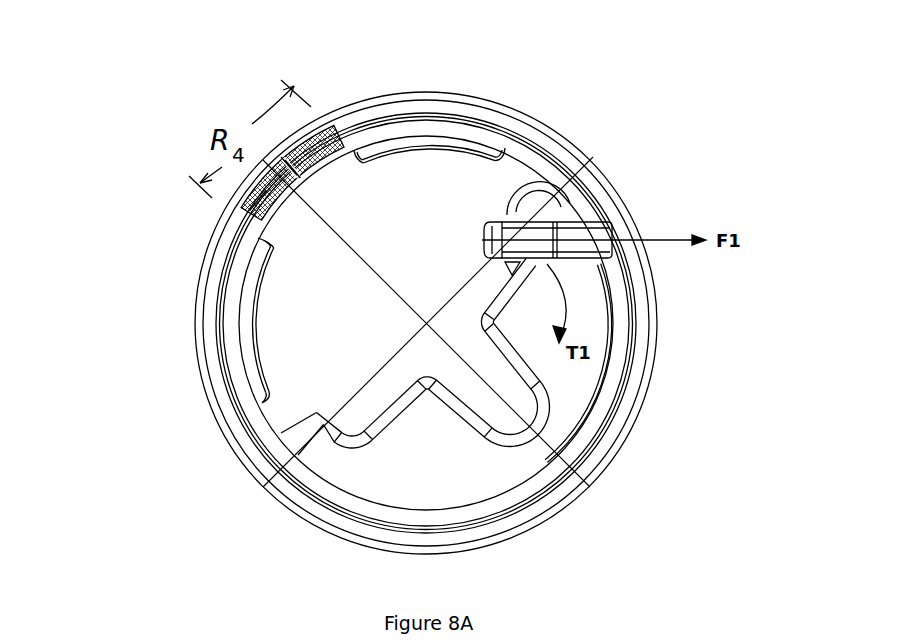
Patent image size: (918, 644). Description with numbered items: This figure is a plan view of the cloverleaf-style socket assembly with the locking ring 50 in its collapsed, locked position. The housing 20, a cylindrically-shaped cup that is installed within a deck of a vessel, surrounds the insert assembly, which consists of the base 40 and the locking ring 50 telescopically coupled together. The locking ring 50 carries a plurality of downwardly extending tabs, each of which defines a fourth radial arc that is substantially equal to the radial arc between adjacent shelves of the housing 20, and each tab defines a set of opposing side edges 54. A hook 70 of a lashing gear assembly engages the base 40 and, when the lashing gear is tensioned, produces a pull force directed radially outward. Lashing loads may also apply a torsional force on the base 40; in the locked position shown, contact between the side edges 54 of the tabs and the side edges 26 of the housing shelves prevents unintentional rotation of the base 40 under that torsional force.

The housing 20 is at (633, 437).
The side edges 26 is at (257, 237).
The base 40 is at (372, 477).
The locking ring 50 is at (491, 141).
The side edges 54 is at (334, 133).
The hook 70 is at (578, 228).